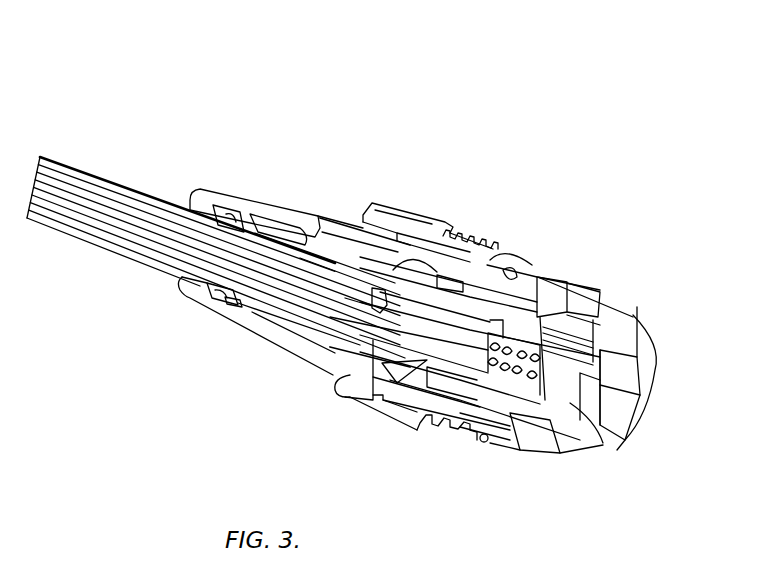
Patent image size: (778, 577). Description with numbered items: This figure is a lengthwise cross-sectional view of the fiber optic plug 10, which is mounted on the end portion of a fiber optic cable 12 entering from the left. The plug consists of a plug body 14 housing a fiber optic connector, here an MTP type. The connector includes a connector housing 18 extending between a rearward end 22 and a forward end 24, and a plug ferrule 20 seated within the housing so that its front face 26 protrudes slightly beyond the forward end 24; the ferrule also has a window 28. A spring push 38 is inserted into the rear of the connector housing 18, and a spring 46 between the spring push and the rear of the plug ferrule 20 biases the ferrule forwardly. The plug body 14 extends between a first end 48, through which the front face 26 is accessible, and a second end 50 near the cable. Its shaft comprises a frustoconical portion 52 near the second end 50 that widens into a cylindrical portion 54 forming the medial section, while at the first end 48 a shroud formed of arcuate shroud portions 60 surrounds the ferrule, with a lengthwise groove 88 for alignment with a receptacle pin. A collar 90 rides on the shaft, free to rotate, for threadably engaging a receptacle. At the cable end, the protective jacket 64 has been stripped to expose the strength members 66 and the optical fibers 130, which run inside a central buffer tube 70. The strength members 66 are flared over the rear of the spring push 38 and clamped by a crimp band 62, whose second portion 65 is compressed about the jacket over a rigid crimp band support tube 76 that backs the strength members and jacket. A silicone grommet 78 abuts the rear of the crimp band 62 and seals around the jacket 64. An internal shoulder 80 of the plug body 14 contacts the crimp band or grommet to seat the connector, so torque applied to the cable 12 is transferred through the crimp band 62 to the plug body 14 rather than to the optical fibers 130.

The fiber optic plug 10 is at (107, 332).
The fiber optic cable 12 is at (97, 172).
The plug body 14 is at (708, 148).
The connector housing 18 is at (527, 320).
The plug ferrule 20 is at (557, 387).
The rearward end 22 is at (480, 243).
The forward end 24 is at (615, 350).
The front face 26 is at (600, 440).
The window 28 is at (565, 398).
The spring push 38 is at (427, 360).
The spring 46 is at (520, 380).
The first end 48 is at (643, 350).
The second end 50 is at (187, 190).
The frustoconical portion 52 is at (298, 218).
The cylindrical portion 54 is at (442, 256).
The arcuate shroud portions 60 is at (620, 412).
The crimp band 62 is at (307, 333).
The protective jacket 64 is at (268, 302).
The second portion 65 is at (317, 275).
The strength members 66 is at (335, 280).
The buffer tube 70 is at (342, 310).
The crimp band support tube 76 is at (362, 322).
The grommet 78 is at (257, 207).
The internal shoulder 80 is at (213, 203).
The groove 88 is at (640, 383).
The collar 90 is at (390, 223).
The optical fibers 130 is at (448, 343).